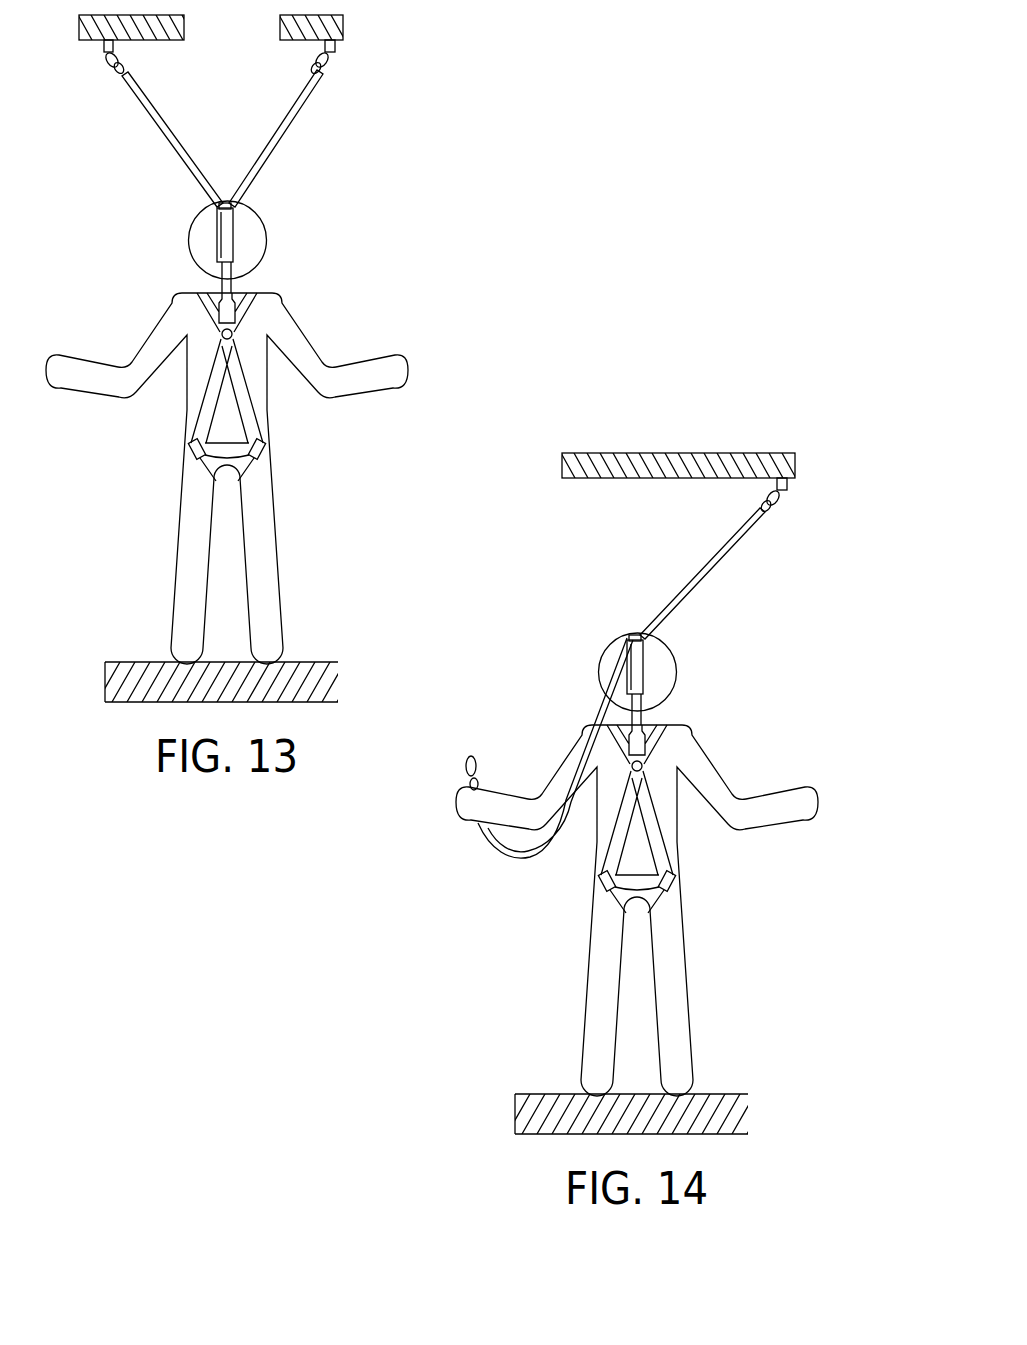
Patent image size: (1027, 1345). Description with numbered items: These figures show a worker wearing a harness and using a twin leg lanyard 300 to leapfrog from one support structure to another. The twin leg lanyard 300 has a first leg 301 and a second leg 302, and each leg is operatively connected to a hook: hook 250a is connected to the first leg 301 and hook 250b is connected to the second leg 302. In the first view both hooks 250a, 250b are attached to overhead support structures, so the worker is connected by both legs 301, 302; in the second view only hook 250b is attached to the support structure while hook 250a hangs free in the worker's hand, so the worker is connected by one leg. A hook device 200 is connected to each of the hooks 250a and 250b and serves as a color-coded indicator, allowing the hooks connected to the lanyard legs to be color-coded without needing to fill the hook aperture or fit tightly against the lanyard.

In FIG. 13, the hook device 200 is at (204, 178).
In FIG. 14, the hook device 200 is at (635, 703).
In FIG. 13, the hook 250a is at (103, 58).
In FIG. 14, the hook 250a is at (472, 752).
In FIG. 13, the hook 250b is at (334, 63).
In FIG. 14, the hook 250b is at (784, 503).
In FIG. 13, the twin leg lanyard 300 is at (174, 197).
In FIG. 14, the twin leg lanyard 300 is at (587, 654).
In FIG. 13, the first leg 301 is at (157, 129).
In FIG. 14, the first leg 301 is at (522, 861).
In FIG. 13, the second leg 302 is at (263, 169).
In FIG. 14, the second leg 302 is at (666, 602).